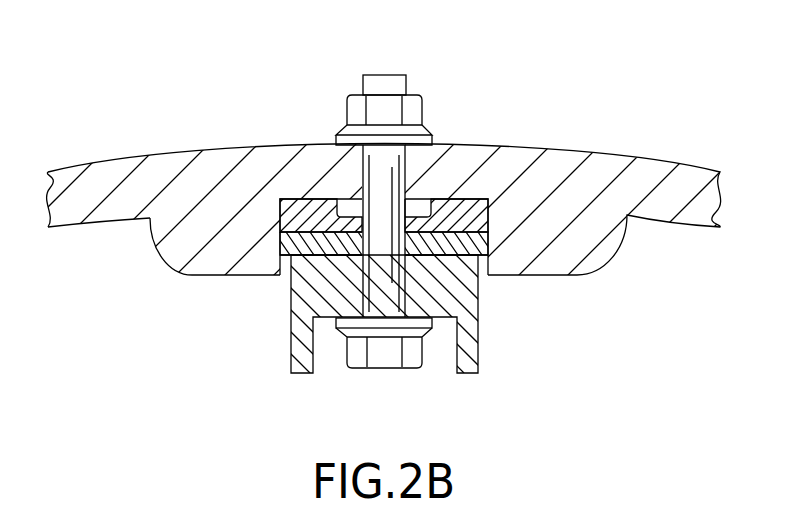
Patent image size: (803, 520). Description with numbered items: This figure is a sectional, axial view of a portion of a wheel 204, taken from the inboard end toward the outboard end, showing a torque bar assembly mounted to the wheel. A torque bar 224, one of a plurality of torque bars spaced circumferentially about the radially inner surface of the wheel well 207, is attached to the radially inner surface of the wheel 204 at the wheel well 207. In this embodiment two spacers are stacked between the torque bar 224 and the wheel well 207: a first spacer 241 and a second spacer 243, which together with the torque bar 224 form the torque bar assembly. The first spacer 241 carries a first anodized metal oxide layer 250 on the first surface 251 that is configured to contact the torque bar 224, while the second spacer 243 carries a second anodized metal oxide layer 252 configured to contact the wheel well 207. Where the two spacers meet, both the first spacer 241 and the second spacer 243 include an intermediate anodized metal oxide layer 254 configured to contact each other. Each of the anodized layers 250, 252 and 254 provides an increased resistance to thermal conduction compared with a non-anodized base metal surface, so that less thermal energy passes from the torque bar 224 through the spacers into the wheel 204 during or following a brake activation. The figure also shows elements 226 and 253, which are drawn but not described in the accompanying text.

The wheel 204 is at (658, 170).
The wheel well 207 is at (157, 218).
The torque bar 224 is at (449, 295).
The fastener (bolt with nuts and washers) 226 is at (390, 105).
The first spacer 241 is at (295, 243).
The second spacer 243 is at (318, 210).
The first anodized metal oxide layer 250 is at (322, 257).
The first surface 251 is at (343, 256).
The second anodized metal oxide layer 252 is at (487, 200).
The right bushing 253 is at (482, 200).
The intermediate anodized metal oxide layer 254 is at (452, 232).